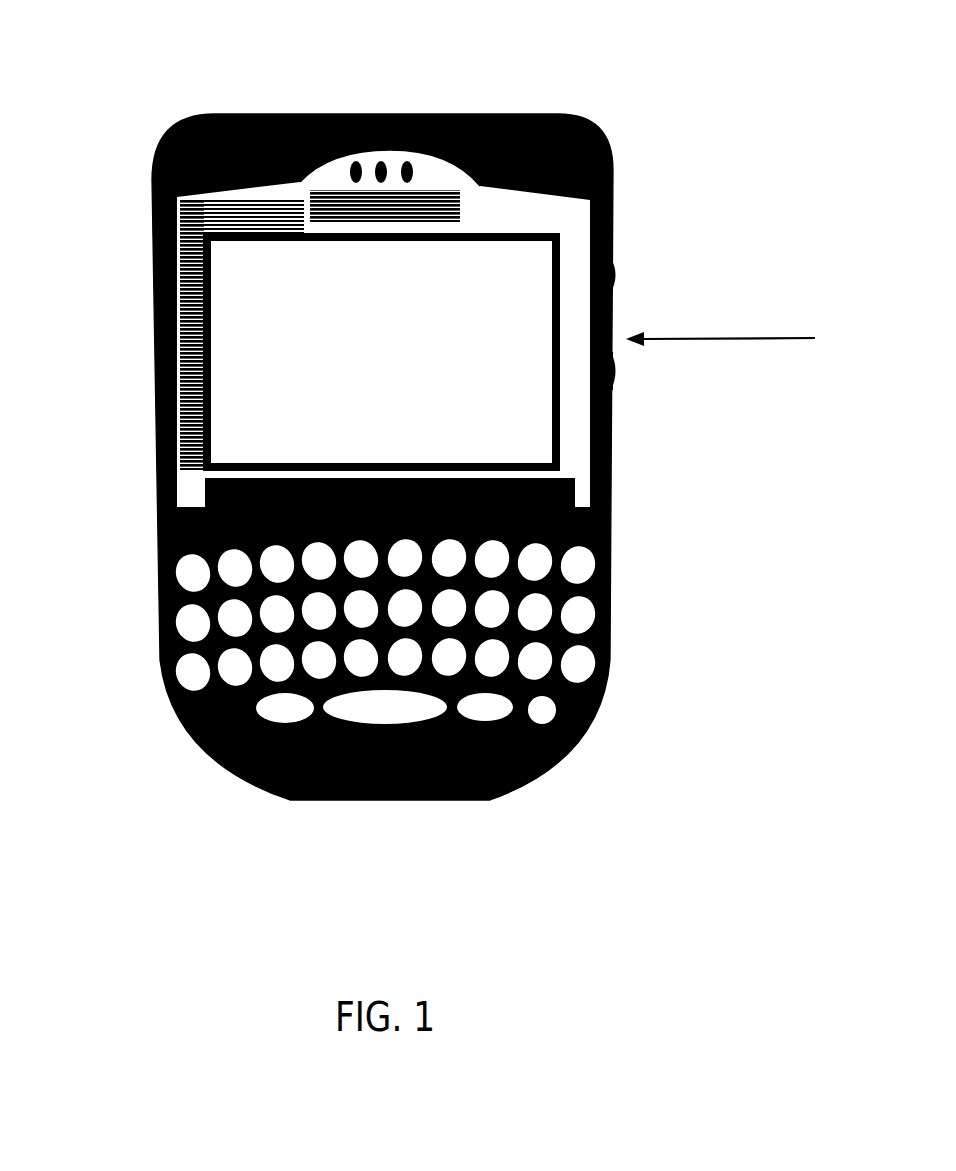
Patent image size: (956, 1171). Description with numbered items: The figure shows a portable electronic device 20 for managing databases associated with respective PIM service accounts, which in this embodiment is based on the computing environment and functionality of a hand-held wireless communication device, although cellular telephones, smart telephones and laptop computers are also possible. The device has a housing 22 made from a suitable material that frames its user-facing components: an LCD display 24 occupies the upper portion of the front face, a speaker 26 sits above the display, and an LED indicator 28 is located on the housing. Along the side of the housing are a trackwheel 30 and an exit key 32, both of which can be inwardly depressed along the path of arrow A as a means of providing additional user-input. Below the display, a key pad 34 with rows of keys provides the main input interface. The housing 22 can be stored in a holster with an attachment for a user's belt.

The portable electronic device 20 is at (668, 78).
The housing 22 is at (536, 775).
The LCD display 24 is at (230, 338).
The speaker 26 is at (372, 160).
The LED indicator 28 is at (548, 125).
The trackwheel 30 is at (617, 272).
The exit key 32 is at (617, 383).
The key pad 34 is at (540, 664).